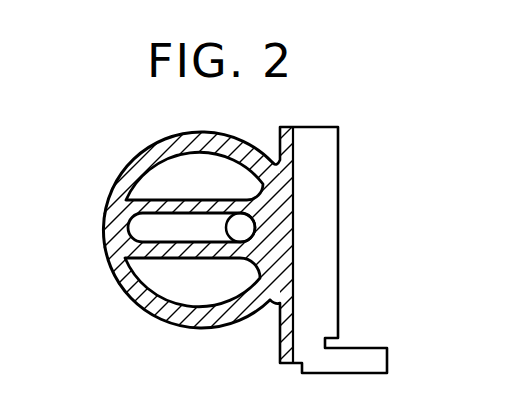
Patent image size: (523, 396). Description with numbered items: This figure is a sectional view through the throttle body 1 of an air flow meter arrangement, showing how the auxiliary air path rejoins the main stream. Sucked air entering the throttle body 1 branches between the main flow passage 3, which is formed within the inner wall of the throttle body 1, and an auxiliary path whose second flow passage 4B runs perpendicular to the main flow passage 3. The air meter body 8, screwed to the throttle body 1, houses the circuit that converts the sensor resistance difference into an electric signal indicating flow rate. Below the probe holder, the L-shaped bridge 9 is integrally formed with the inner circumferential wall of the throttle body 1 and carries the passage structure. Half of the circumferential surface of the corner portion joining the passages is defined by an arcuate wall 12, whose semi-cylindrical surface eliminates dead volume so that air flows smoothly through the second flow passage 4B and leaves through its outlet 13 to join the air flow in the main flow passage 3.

The throttle body 1 is at (206, 139).
The main flow passage 3 is at (208, 301).
The second flow passage 4B is at (146, 304).
The air meter body 8 is at (332, 259).
The bridge 9 is at (196, 206).
The arcuate wall 12 is at (249, 216).
The outlet 13 is at (130, 178).